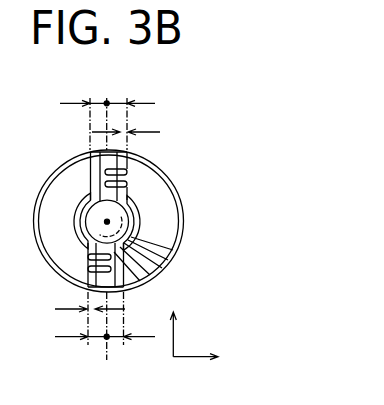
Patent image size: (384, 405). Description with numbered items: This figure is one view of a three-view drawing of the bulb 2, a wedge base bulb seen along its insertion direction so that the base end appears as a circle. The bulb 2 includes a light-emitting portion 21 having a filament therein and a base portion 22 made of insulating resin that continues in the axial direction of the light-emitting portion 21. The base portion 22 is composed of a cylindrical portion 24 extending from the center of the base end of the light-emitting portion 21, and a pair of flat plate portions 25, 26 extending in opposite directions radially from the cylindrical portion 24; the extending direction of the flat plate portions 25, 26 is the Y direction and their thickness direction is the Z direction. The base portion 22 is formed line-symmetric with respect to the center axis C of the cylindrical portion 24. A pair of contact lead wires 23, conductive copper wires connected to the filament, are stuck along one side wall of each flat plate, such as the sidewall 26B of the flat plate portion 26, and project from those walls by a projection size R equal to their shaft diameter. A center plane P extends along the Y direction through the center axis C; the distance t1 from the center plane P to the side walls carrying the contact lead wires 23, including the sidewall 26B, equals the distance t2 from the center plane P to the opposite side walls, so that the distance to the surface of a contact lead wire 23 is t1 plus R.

The bulb 2 is at (178, 131).
The light-emitting portion 21 is at (58, 168).
The base portion 22 is at (88, 152).
The contact lead wires 23 is at (129, 175).
The cylindrical portion 24 is at (74, 223).
The flat plate portion 25 is at (153, 273).
The flat plate portion 26 is at (92, 187).
The sidewall 26B is at (130, 168).
The center axis C is at (110, 222).
The projection size R is at (107, 210).
The distance t1 is at (104, 207).
The distance t2 is at (105, 218).
The center plane P is at (107, 352).
The Y direction Y is at (173, 319).
The Z direction Z is at (206, 357).